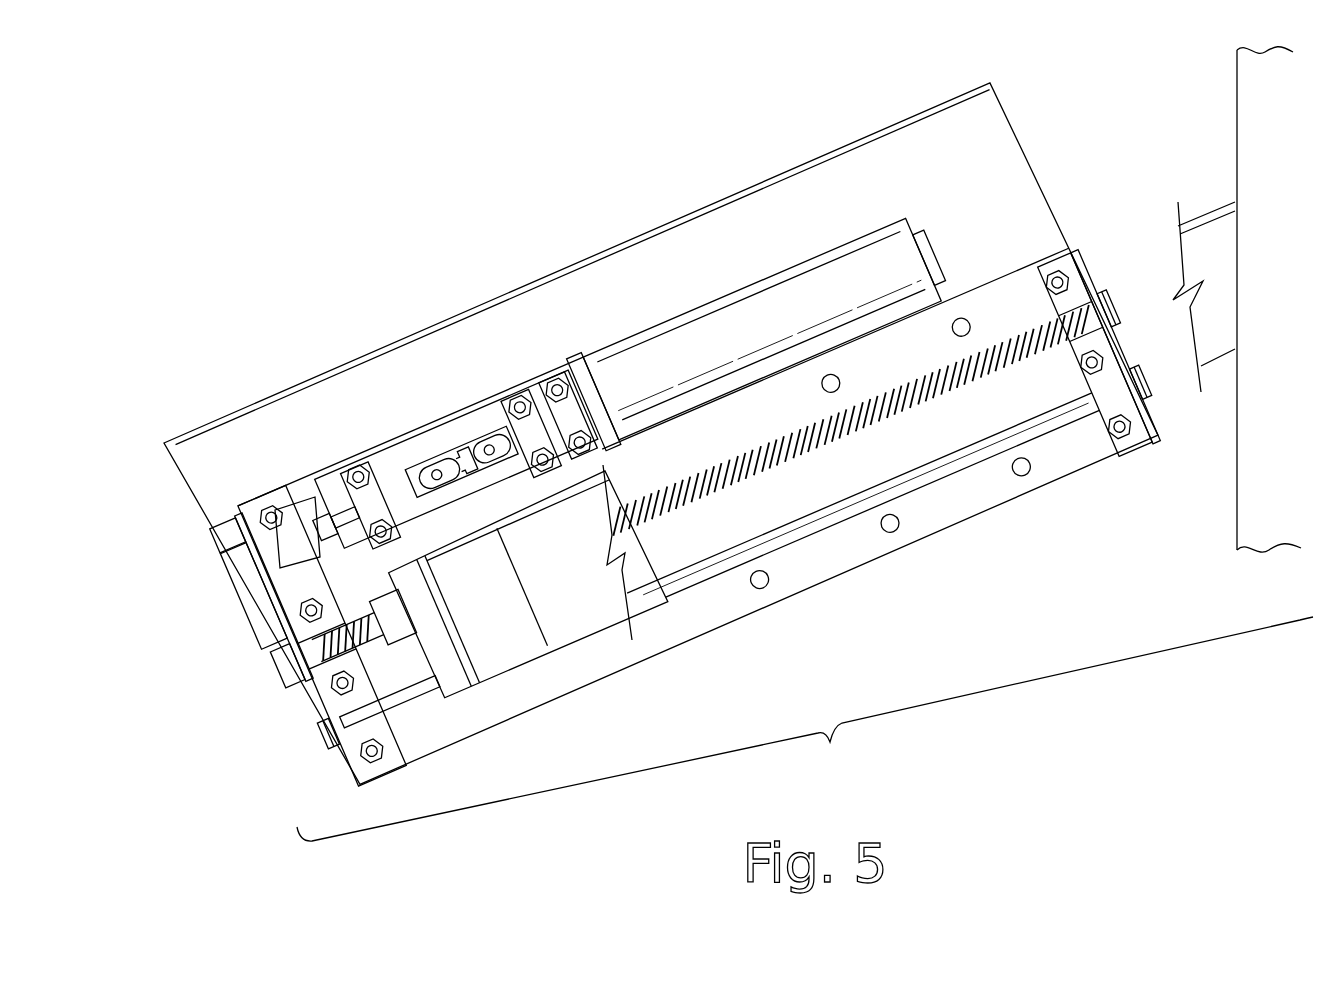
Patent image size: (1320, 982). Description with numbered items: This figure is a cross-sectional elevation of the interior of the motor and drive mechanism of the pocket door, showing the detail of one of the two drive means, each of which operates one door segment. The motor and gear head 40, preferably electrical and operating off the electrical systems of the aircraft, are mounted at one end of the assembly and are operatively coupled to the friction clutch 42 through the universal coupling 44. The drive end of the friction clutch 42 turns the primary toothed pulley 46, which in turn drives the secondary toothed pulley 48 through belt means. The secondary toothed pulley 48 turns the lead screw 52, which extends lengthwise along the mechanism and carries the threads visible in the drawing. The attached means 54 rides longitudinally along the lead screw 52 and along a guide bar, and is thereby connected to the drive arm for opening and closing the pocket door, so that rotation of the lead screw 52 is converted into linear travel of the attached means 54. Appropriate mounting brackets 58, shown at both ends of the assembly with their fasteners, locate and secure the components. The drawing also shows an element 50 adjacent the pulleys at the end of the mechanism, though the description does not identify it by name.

The motor and gear head 40 is at (770, 342).
The friction clutch 42 is at (300, 502).
The universal coupling 44 is at (472, 478).
The primary toothed pulley 46 is at (232, 535).
The secondary toothed pulley 48 is at (296, 683).
The mounting block 50 is at (258, 608).
The lead screw 52 is at (735, 485).
The attached means 54 is at (496, 617).
The mounting brackets 58 is at (268, 500).